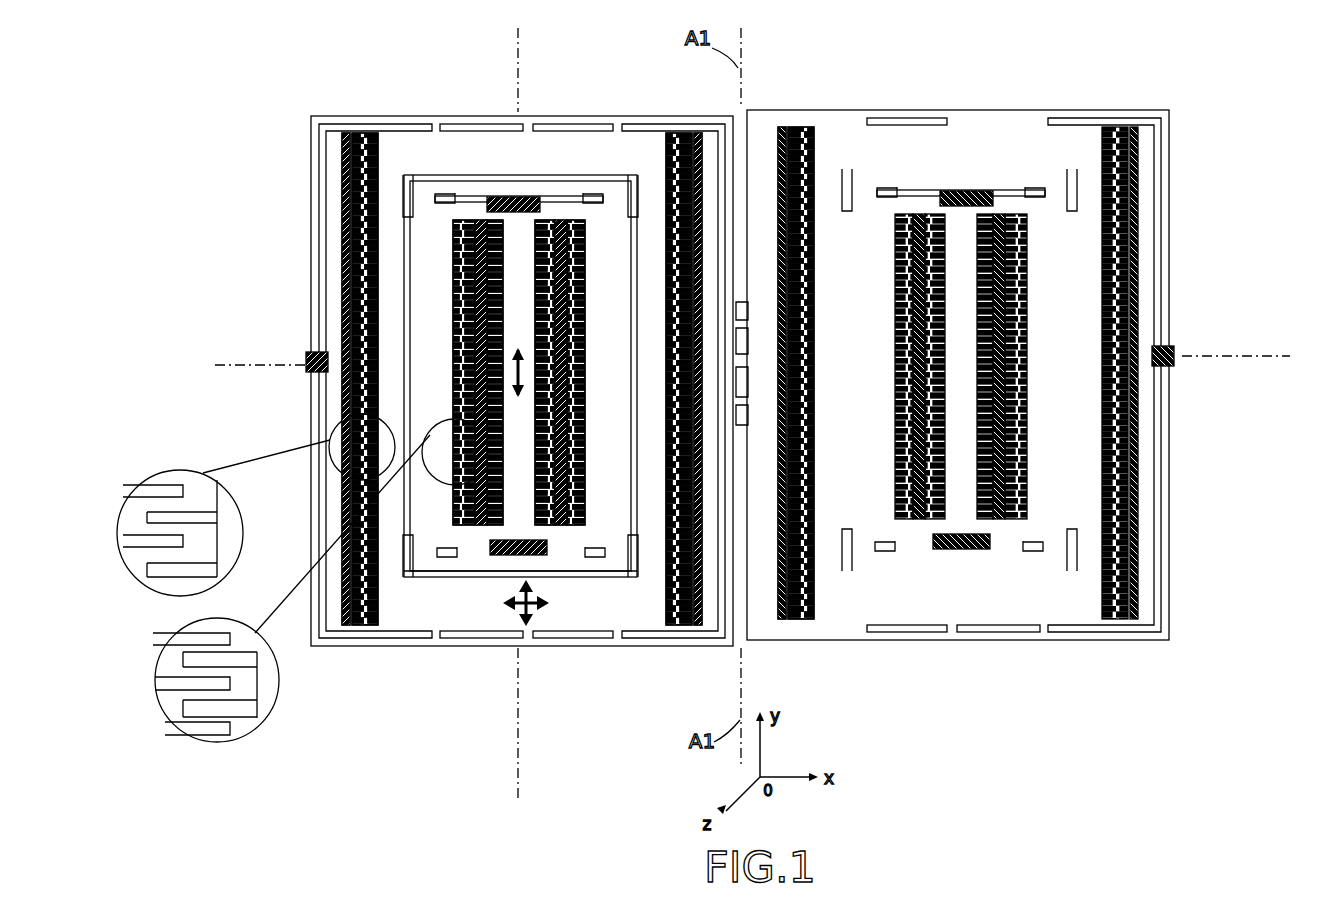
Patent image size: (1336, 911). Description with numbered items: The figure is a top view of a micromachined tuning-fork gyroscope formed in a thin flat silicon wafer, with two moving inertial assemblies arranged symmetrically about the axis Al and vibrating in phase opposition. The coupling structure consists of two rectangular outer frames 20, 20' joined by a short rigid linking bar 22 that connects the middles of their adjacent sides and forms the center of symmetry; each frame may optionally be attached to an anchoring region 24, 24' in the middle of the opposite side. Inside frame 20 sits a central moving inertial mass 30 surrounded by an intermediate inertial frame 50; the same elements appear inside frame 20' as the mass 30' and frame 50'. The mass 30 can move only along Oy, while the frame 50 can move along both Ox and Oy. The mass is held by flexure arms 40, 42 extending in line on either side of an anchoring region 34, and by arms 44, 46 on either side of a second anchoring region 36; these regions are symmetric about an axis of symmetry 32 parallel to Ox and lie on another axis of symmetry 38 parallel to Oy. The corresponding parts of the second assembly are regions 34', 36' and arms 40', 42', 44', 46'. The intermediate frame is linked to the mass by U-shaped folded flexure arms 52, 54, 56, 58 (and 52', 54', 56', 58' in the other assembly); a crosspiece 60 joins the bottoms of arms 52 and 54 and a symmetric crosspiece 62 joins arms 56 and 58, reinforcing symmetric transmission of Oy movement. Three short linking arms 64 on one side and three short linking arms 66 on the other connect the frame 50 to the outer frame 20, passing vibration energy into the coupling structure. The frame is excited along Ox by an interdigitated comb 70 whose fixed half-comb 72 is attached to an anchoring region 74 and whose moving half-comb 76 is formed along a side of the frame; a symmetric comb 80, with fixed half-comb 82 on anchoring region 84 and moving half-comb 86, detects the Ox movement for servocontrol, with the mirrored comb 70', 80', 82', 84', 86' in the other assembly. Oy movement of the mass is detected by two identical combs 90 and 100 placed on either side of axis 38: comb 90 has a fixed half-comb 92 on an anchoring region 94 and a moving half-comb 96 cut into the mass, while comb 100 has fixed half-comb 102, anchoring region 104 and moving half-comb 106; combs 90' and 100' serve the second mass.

The rectangular outer frame 20 is at (522, 356).
The rectangular outer frame 20' is at (958, 373).
The short linking bar 22 is at (740, 362).
The anchoring region 24 is at (271, 377).
The anchoring region 24' is at (1196, 374).
The central moving inertial mass 30 is at (525, 170).
The central moving inertial mass 30' is at (961, 167).
The axis of symmetry 32 is at (1282, 354).
The anchoring region 34 is at (533, 175).
The anchoring region 34' is at (988, 172).
The anchoring region 36 is at (539, 571).
The anchoring region 36' is at (972, 573).
The axis of symmetry 38 is at (522, 755).
The flexure arm 40 is at (436, 219).
The flexure arm 40' is at (1045, 216).
The flexure arm 42 is at (600, 219).
The flexure arm 42' is at (876, 216).
The flexure arm 44 is at (439, 530).
The flexure arm 44' is at (1043, 522).
The flexure arm 46 is at (599, 530).
The flexure arm 46' is at (875, 522).
The intermediate inertial frame 50 is at (481, 652).
The intermediate inertial frame 50' is at (981, 652).
The flexure arm 52 is at (399, 178).
The flexure arm 52' is at (1076, 175).
The flexure arm 54 is at (645, 178).
The flexure arm 54' is at (834, 175).
The flexure arm 56 is at (399, 575).
The flexure arm 56' is at (1081, 571).
The flexure arm 58 is at (646, 574).
The flexure arm 58' is at (839, 571).
The crosspiece 60 is at (485, 177).
The crosspiece 62 is at (478, 575).
The short linking arm 64 is at (526, 123).
The short linking arm 66 is at (525, 640).
The interdigitated comb 70 is at (371, 431).
The interdigitated comb 70' is at (1123, 412).
The fixed half-comb 72 is at (358, 630).
The anchoring region 74 is at (342, 140).
The moving half-comb 76 is at (370, 630).
The interdigitated comb structure 80 is at (658, 431).
The interdigitated comb structure 80' is at (799, 327).
The fixed half-comb 82 is at (685, 411).
The fixed half-comb 82' is at (773, 347).
The anchoring region 84 is at (681, 402).
The anchoring region 84' is at (980, 399).
The moving half-comb 86 is at (652, 411).
The moving half-comb 86' is at (817, 347).
The interdigitated comb 90 is at (437, 372).
The interdigitated comb 90' is at (1020, 366).
The fixed half-comb 92 is at (458, 300).
The anchoring region 94 is at (483, 283).
The moving half-comb 96 is at (458, 333).
The interdigitated structure 100 is at (598, 372).
The interdigitated structure 100' is at (898, 366).
The fixed half-comb 102 is at (580, 350).
The anchoring region 104 is at (580, 422).
The moving half-comb 106 is at (574, 305).